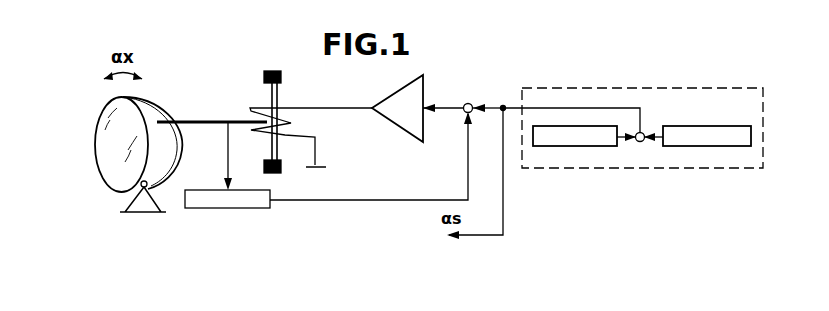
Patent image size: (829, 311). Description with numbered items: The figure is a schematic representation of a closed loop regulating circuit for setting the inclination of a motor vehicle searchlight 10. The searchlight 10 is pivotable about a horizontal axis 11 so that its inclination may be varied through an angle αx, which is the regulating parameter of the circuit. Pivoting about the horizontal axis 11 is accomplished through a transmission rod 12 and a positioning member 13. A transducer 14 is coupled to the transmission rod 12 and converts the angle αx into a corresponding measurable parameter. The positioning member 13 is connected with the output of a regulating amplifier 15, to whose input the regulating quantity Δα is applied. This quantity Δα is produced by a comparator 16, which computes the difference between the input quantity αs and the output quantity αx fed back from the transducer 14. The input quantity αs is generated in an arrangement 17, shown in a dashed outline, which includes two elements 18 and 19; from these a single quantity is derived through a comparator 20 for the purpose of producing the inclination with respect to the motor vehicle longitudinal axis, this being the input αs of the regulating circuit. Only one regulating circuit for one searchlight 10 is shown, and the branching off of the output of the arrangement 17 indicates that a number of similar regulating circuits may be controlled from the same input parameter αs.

The searchlight 10 is at (108, 114).
The horizontal axis 11 is at (149, 186).
The transmission rod 12 is at (201, 120).
The positioning member 13 is at (251, 106).
The transducer 14 is at (250, 200).
The regulating amplifier 15 is at (412, 120).
The comparator 16 is at (468, 103).
The arrangement 17 is at (655, 98).
The element 18 is at (563, 139).
The element 19 is at (708, 139).
The comparator 20 is at (640, 142).